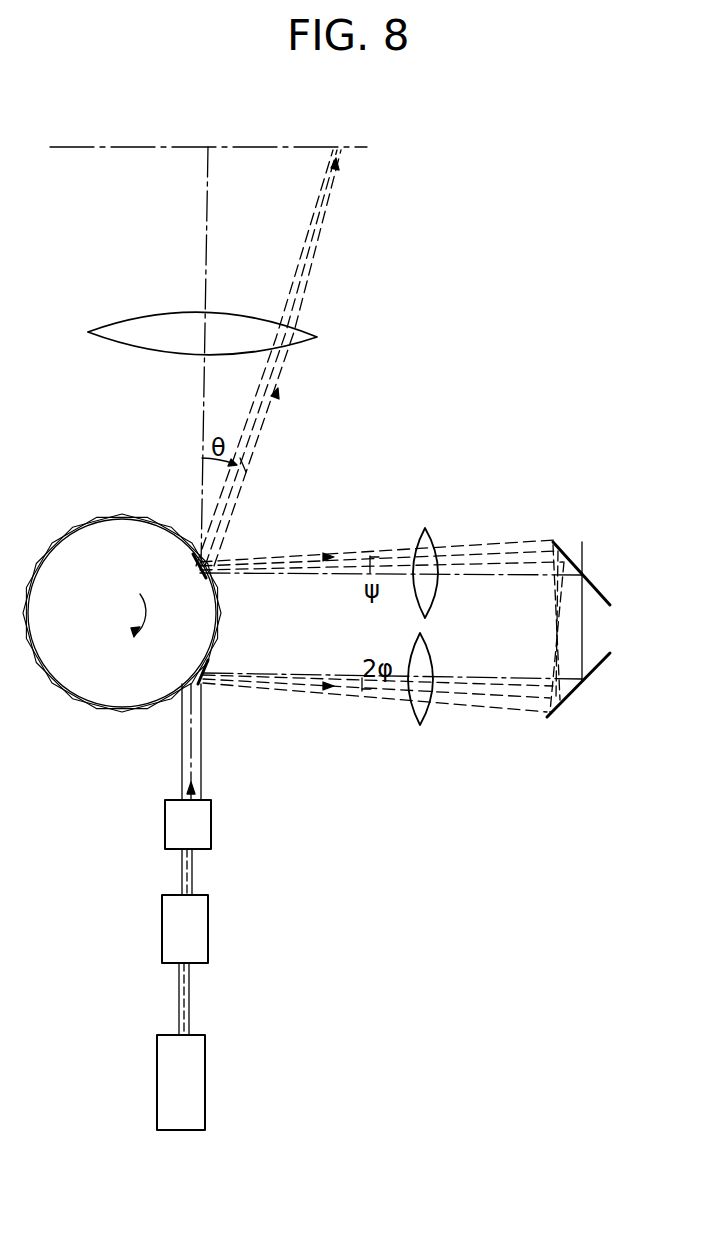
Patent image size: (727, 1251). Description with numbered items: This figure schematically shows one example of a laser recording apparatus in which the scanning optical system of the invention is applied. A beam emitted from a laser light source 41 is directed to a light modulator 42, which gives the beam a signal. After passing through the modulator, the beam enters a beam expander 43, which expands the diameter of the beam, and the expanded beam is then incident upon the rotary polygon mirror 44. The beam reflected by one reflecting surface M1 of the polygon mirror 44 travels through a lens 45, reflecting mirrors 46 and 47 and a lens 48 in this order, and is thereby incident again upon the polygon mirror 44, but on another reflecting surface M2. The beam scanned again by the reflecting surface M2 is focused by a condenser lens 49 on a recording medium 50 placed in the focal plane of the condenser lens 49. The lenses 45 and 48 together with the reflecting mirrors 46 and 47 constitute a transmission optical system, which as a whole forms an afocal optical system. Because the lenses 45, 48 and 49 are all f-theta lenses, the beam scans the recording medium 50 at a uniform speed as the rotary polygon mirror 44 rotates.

The laser light source 41 is at (205, 1068).
The light modulator 42 is at (208, 918).
The beam expander 43 is at (211, 815).
The rotary polygon mirror 44 is at (84, 688).
The lens 45 is at (420, 725).
The reflecting mirror 46 is at (595, 668).
The reflecting mirror 47 is at (580, 563).
The lens 48 is at (425, 528).
The condenser lens 49 is at (315, 337).
The recording medium 50 is at (351, 150).
The reflecting surface M1 is at (205, 663).
The reflecting surface M2 is at (199, 560).